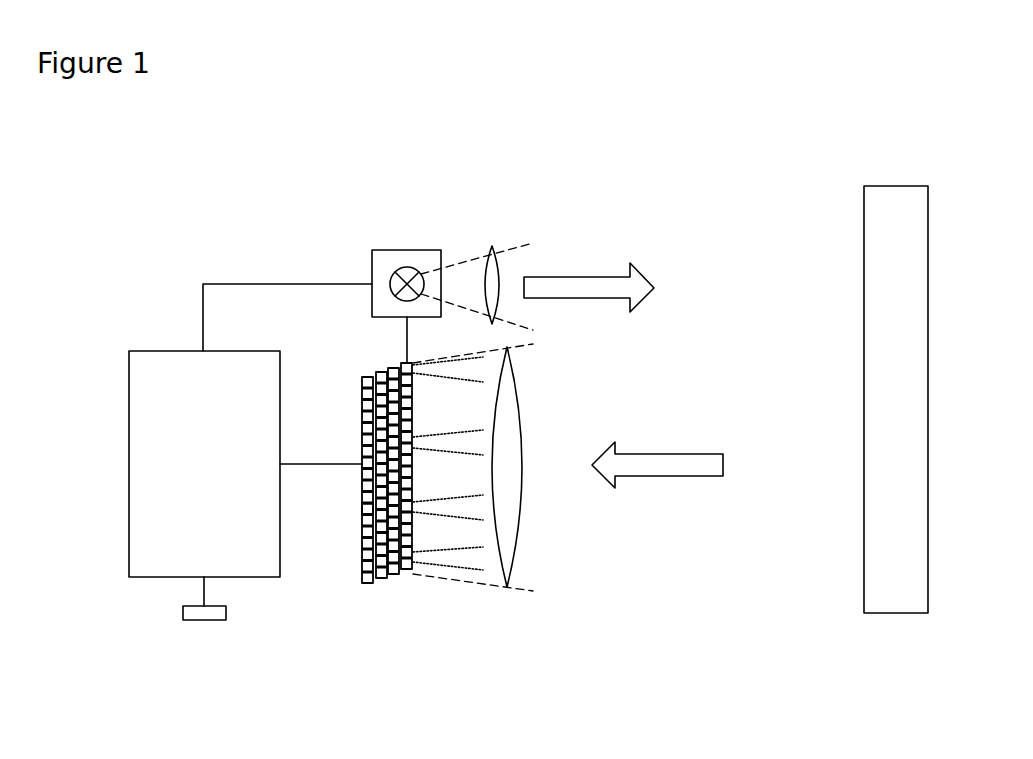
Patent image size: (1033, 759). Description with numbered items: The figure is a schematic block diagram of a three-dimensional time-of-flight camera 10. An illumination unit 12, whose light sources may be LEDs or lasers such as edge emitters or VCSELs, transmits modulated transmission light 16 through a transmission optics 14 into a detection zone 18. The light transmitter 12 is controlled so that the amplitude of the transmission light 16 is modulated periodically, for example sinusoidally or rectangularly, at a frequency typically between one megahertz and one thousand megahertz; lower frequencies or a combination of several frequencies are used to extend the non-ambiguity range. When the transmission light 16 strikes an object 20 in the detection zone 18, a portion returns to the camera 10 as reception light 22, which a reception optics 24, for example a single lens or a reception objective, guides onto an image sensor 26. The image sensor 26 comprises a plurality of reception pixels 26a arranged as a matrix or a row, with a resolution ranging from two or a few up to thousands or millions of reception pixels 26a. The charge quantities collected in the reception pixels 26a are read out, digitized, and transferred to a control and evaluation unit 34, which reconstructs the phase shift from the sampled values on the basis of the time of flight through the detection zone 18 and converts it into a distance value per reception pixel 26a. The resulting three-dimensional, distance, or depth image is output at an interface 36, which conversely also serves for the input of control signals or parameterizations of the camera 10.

The 3D time-of-flight camera 10 is at (142, 243).
The illumination unit 12 is at (397, 255).
The transmission optics 14 is at (492, 265).
The transmission light 16 is at (578, 283).
The detection zone 18 is at (772, 163).
The object 20 is at (875, 220).
The reception light 22 is at (680, 468).
The reception optics 24 is at (517, 503).
The image sensor 26 is at (399, 594).
The reception pixel 26a is at (372, 507).
The control and evaluation unit 34 is at (155, 457).
The interface 36 is at (195, 623).